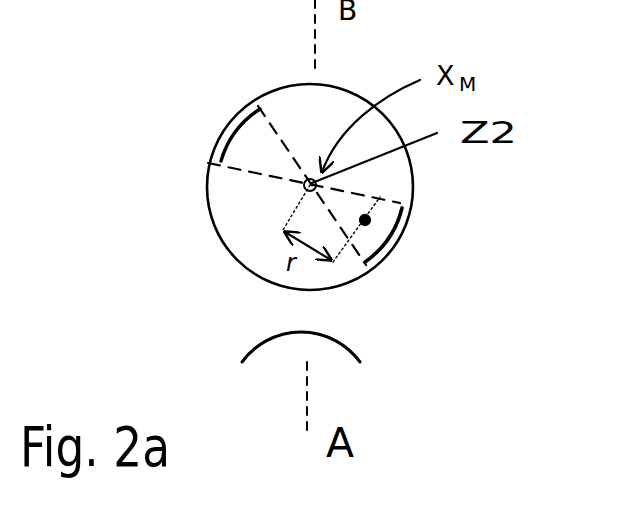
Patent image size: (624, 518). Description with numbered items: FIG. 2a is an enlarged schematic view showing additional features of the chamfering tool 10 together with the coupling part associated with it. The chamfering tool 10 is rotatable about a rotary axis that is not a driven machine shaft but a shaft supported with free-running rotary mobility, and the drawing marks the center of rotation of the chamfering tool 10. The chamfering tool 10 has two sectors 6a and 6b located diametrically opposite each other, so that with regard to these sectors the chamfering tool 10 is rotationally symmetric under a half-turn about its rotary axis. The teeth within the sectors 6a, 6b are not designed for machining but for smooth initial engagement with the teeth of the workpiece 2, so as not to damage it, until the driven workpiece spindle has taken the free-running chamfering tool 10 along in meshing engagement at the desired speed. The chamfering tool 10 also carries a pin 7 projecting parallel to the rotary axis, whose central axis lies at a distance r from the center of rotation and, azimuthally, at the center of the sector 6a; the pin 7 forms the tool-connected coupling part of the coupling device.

The workpiece 2 is at (338, 350).
The sector 6a is at (397, 238).
The sector 6b is at (230, 132).
The pin 7 is at (366, 218).
The chamfering tool 10 is at (227, 218).